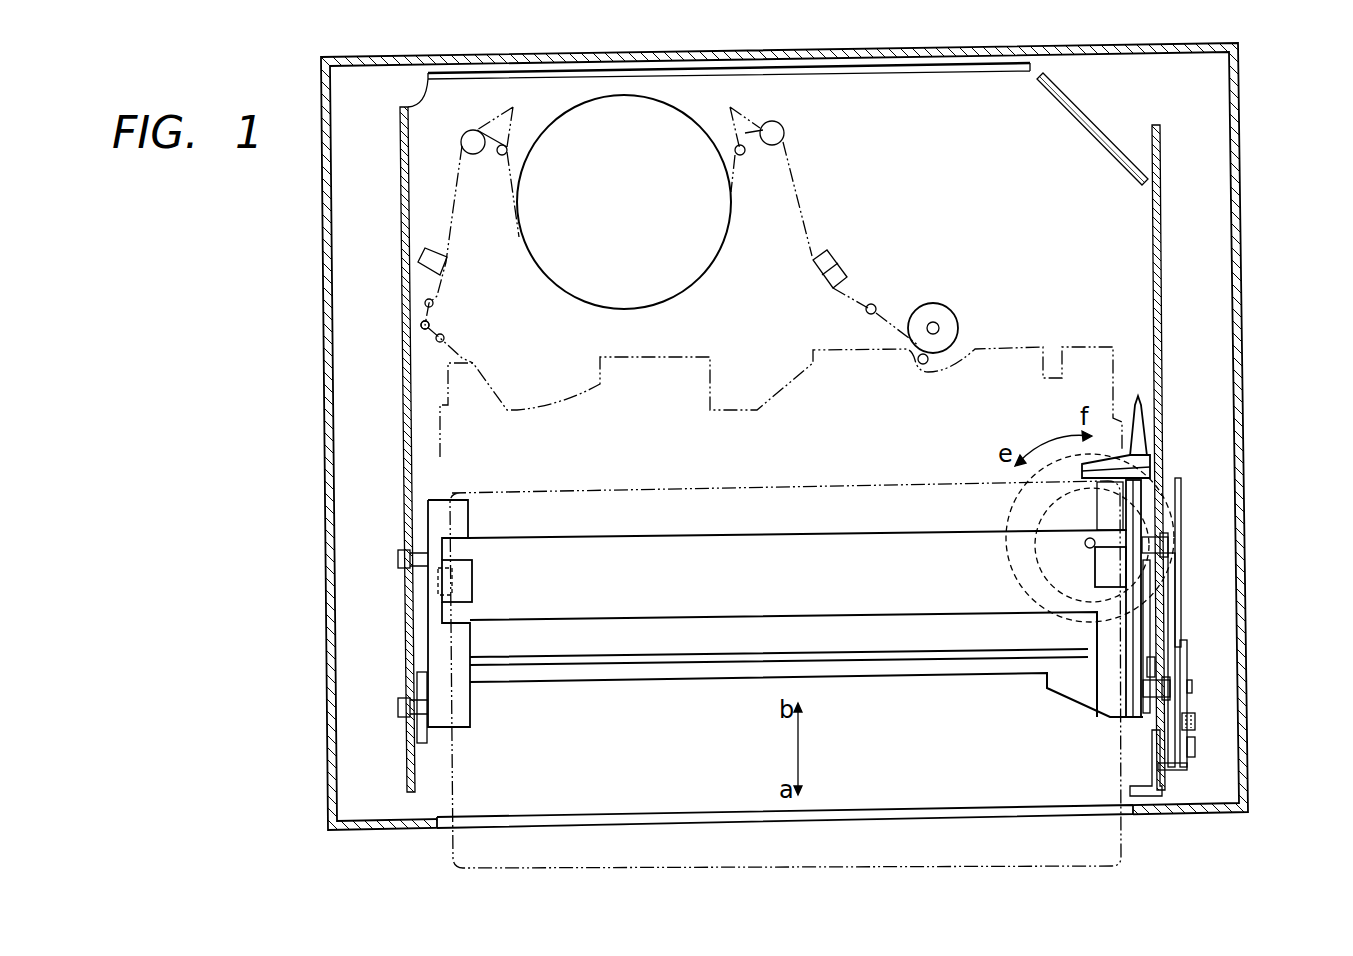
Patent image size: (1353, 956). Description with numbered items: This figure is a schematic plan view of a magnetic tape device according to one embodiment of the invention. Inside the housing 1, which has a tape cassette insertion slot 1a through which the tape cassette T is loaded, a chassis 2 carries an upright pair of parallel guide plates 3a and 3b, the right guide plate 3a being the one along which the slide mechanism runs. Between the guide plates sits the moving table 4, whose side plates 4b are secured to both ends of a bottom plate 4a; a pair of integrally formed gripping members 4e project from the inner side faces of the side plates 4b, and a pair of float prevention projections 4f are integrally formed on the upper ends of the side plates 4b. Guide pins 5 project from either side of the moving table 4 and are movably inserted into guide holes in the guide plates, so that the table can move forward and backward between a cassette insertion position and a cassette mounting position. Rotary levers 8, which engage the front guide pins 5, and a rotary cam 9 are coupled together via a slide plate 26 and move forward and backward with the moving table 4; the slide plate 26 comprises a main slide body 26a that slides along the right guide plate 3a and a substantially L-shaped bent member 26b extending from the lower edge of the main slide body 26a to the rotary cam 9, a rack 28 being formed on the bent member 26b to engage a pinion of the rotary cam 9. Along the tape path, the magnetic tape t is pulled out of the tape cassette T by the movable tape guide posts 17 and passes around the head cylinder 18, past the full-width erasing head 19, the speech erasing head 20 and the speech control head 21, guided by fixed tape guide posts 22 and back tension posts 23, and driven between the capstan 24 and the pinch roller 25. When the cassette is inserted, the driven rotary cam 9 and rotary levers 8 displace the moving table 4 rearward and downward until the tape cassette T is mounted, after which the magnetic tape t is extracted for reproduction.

The housing 1 is at (321, 464).
The tape cassette insertion slot 1a is at (443, 829).
The chassis 2 is at (1077, 152).
The right guide plate 3a is at (1161, 362).
The guide plate 3b is at (405, 410).
The moving table 4 is at (850, 534).
The bottom plate 4a is at (803, 548).
The side plates 4b is at (430, 636).
The gripping members 4e is at (448, 576).
The float prevention projections 4f is at (472, 596).
The guide pins 5 is at (402, 558).
The rotary levers 8 is at (424, 745).
The rotary cam 9 is at (1008, 510).
The movable tape guide posts 17 is at (731, 108).
The head cylinder 18 is at (588, 292).
The full-width erasing head 19 is at (436, 255).
The speech erasing head 20 is at (833, 262).
The speech control head 21 is at (845, 280).
The fixed tape guide posts 22 is at (436, 338).
The back tension posts 23 is at (433, 323).
The capstan 24 is at (923, 375).
The pinch roller 25 is at (947, 313).
The slide plate 26 is at (1312, 477).
The main slide body 26a is at (1182, 496).
The bent member 26b is at (1174, 621).
The rack 28 is at (1148, 577).
The tape cassette T is at (762, 497).
The magnetic tape t is at (800, 192).